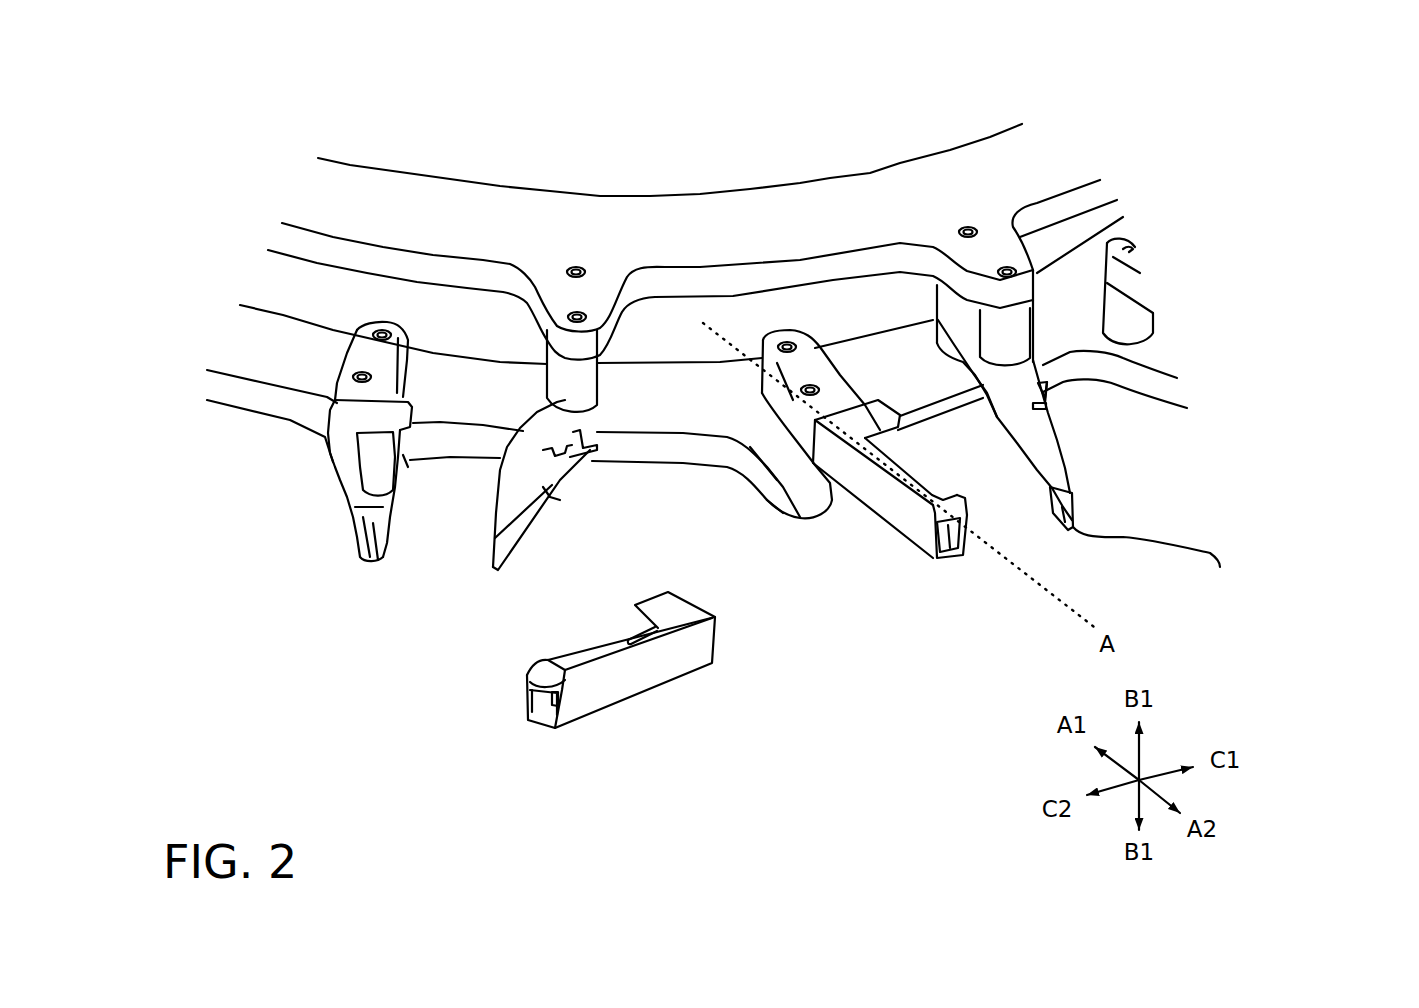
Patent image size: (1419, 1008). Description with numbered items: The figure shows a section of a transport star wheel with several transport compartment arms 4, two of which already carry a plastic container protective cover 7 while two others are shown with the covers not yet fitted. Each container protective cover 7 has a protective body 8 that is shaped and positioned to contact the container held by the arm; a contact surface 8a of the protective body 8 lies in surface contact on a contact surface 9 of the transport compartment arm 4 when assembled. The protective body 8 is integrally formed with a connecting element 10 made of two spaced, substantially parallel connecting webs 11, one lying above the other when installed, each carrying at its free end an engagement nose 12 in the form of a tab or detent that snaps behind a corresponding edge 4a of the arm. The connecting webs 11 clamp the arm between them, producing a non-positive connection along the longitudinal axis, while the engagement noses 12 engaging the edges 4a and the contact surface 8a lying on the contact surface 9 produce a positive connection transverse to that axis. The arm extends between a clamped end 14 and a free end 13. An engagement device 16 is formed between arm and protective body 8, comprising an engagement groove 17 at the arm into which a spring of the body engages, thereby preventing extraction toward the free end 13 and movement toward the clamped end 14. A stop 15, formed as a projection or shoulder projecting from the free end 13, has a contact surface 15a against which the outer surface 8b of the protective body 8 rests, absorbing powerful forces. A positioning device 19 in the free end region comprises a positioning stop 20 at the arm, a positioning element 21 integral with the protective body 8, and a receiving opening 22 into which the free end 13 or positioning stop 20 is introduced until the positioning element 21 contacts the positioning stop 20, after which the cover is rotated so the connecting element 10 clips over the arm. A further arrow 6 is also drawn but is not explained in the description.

The transport compartment arm 4 is at (533, 440).
The edge 4a is at (522, 442).
The first direction 6 is at (720, 727).
The container protective cover 7 is at (327, 547).
The protective body 8 is at (343, 477).
The contact surface 8a is at (587, 648).
The outer surface 8b is at (729, 640).
The contact surface 9 is at (545, 490).
The connecting element 10 is at (682, 565).
The connecting web 11 is at (677, 613).
The engagement nose 12 is at (403, 463).
The free end 13 is at (1102, 485).
The clamped end 14 is at (845, 371).
The stop 15 is at (580, 423).
The contact surface 15a is at (593, 413).
The engagement device 16 is at (1263, 388).
The engagement groove 17 is at (1043, 407).
The positioning device 19 is at (887, 663).
The positioning stop 20 is at (1156, 561).
The positioning element 21 is at (533, 697).
The receiving opening 22 is at (560, 697).